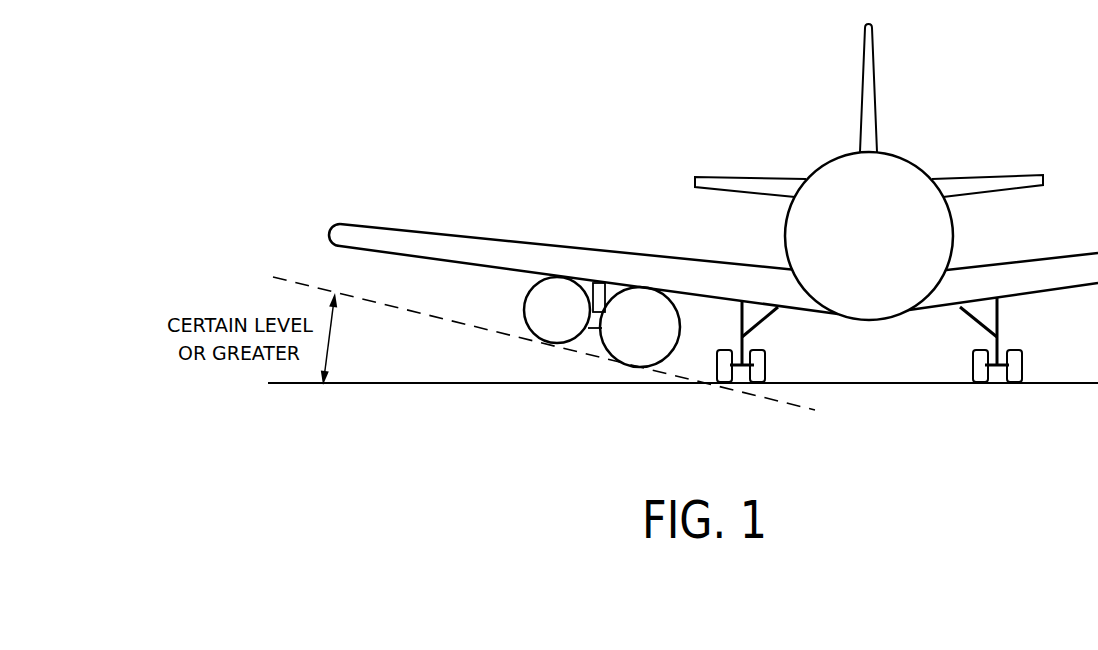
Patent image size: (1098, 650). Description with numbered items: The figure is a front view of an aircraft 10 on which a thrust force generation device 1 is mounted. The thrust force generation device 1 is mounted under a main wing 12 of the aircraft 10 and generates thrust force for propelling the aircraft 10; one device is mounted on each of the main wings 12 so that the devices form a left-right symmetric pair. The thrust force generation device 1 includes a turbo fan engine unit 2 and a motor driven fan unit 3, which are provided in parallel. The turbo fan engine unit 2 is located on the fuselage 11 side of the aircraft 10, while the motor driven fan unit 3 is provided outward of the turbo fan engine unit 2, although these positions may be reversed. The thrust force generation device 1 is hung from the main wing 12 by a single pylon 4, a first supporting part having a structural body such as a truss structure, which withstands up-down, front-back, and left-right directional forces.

The thrust force generation device 1 is at (562, 392).
The turbo fan engine unit 2 is at (645, 356).
The motor driven fan unit 3 is at (540, 300).
The pylon 4 is at (597, 288).
The aircraft 10 is at (713, 203).
The fuselage 11 is at (940, 232).
The main wing 12 is at (648, 262).